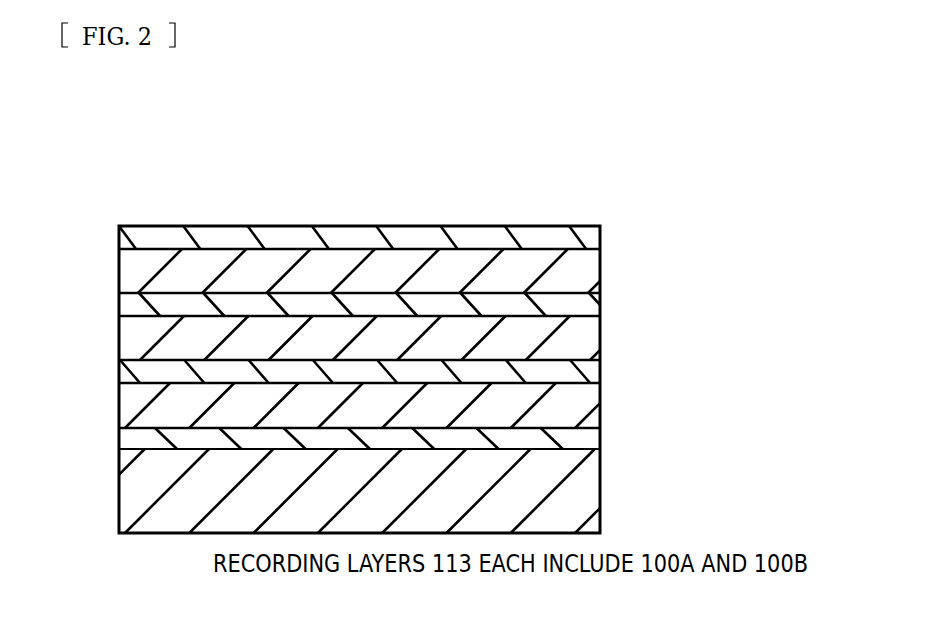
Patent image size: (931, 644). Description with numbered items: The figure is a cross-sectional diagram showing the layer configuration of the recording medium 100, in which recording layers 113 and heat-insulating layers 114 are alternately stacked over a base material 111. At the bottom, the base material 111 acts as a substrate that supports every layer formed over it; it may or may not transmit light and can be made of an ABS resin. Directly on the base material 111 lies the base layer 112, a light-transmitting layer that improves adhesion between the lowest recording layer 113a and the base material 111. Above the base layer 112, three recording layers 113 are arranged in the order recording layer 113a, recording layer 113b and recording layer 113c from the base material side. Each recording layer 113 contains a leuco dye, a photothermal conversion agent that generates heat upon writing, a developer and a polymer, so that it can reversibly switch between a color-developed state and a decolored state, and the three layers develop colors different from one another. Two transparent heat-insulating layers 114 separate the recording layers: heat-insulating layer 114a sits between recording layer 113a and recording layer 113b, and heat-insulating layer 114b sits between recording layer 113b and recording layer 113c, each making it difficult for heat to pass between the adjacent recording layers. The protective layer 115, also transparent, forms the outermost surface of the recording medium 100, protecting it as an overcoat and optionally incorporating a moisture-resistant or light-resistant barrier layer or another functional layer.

The recording medium 100 is at (723, 192).
The base material 111 is at (590, 502).
The base layer 112 is at (590, 440).
The recording layer 113 is at (442, 337).
The recording layer 113a is at (590, 408).
The recording layer 113b is at (590, 333).
The recording layer 113c is at (590, 272).
The heat-insulating layer 114 is at (442, 337).
The heat-insulating layer 114a is at (590, 370).
The heat-insulating layer 114b is at (590, 301).
The protective layer 115 is at (590, 237).